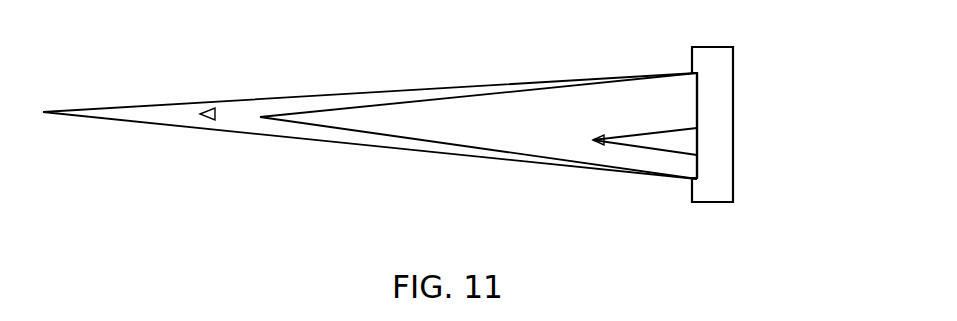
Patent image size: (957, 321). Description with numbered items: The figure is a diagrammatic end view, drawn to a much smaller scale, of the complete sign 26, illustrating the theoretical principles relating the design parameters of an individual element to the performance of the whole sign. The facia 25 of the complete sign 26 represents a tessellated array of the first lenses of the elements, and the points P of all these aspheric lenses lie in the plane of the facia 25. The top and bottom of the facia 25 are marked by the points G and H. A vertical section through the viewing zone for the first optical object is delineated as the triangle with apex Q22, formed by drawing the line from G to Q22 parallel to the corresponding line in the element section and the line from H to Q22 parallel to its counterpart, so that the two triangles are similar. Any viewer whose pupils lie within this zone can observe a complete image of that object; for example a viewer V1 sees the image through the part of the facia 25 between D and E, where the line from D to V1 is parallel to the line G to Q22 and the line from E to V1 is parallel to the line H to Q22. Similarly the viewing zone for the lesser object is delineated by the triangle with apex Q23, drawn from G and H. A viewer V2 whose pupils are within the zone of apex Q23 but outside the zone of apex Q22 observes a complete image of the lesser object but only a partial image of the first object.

The facia 25 is at (697, 93).
The complete sign 26 is at (727, 185).
The apex of viewing zone 23 Q23 is at (50, 103).
The apex of viewing zone 22 Q22 is at (263, 112).
The viewer V1 is at (643, 126).
The viewer V2 is at (208, 95).
The upper edge point of facia G is at (710, 62).
The upper limit of facia part DE D is at (709, 127).
The lower limit of facia part DE E is at (708, 157).
The lower edge point of facia H is at (709, 180).